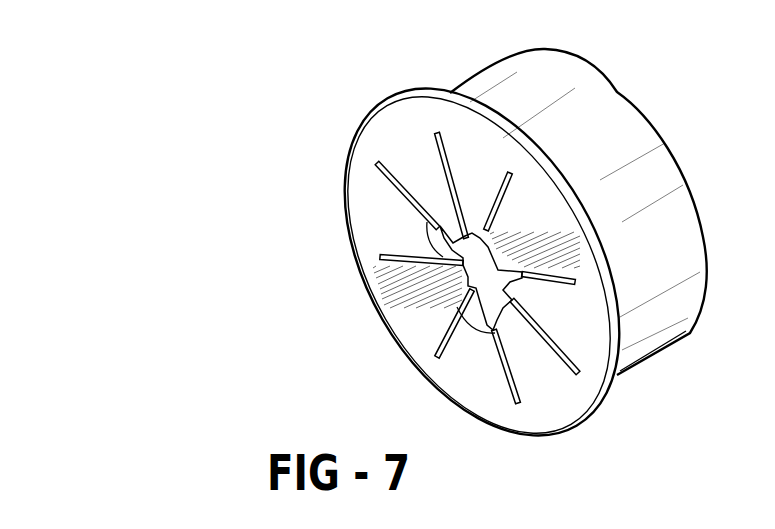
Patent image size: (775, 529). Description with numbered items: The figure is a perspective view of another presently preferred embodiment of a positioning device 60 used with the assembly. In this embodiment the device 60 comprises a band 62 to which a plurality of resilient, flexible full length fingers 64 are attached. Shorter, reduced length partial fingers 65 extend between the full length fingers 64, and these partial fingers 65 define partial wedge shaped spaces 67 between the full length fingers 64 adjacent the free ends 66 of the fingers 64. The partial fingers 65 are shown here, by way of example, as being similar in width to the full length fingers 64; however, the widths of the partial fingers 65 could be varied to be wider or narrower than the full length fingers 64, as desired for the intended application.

The positioning device 60 is at (347, 84).
The band 62 is at (613, 99).
The full length fingers 64 is at (443, 312).
The partial fingers 65 is at (398, 224).
The free ends 66 is at (462, 283).
The partial wedge shaped spaces 67 is at (520, 306).